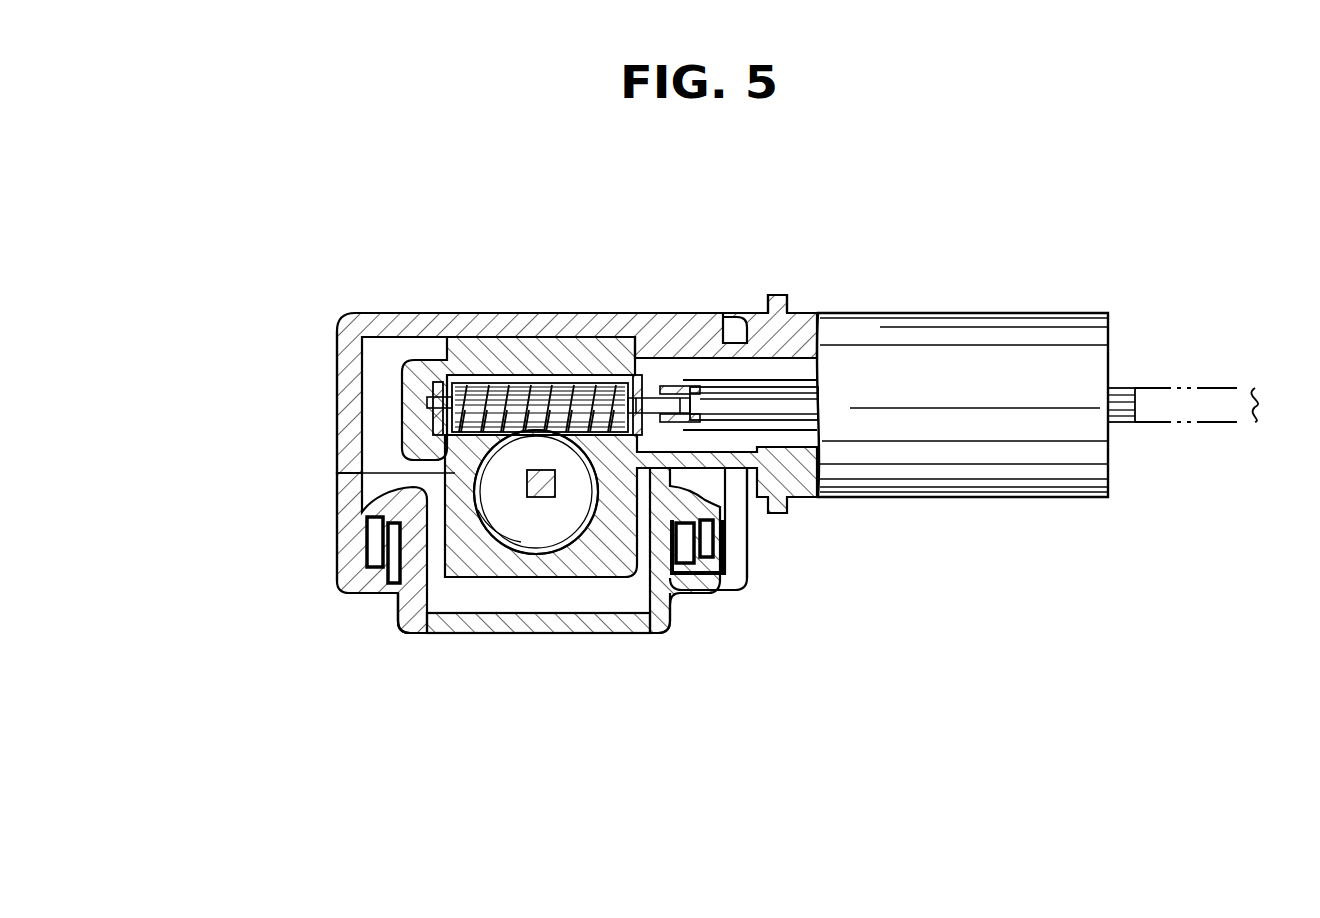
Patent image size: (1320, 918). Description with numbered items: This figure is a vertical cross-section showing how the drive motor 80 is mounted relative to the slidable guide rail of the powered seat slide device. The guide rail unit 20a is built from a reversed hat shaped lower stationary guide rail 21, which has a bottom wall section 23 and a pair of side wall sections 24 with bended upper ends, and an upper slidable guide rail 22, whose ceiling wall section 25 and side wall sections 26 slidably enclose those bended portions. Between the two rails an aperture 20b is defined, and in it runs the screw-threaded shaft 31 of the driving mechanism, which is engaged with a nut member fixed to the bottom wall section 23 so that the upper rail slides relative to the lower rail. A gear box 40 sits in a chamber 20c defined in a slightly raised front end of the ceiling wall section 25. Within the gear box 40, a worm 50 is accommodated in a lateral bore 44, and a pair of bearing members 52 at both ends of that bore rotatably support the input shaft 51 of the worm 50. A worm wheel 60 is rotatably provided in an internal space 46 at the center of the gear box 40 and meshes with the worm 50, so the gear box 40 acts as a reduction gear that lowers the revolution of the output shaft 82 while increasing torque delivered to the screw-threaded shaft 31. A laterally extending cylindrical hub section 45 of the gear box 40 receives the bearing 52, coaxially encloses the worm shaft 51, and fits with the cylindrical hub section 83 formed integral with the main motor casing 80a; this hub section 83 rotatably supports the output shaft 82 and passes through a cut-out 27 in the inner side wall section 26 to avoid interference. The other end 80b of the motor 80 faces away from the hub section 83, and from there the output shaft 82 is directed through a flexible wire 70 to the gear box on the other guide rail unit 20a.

The guide rail unit 20a is at (625, 280).
The aperture 20b is at (440, 588).
The chamber 20c is at (404, 613).
The lower stationary guide rail 21 is at (408, 632).
The upper slidable guide rail 22 is at (637, 317).
The bottom wall section 23 is at (528, 627).
The side wall sections 24 is at (390, 528).
The ceiling wall section 25 is at (420, 317).
The side wall sections 26 is at (337, 422).
The cut-out 27 is at (748, 345).
The screw-threaded shaft 31 is at (545, 500).
The gear box 40 is at (455, 463).
The lateral bore 44 is at (477, 372).
The cylindrical hub section 45 is at (700, 345).
The internal space 46 is at (515, 533).
The worm 50 is at (540, 393).
The input shaft 51 is at (730, 393).
The bearing members 52 is at (390, 317).
The worm wheel 60 is at (570, 502).
The flexible wire 70 is at (1152, 387).
The drive motor 80 is at (972, 327).
The main motor casing 80a is at (863, 337).
The other end of the motor 80b is at (1072, 485).
The output shaft 82 is at (803, 493).
The cylindrical hub section 83 is at (674, 588).